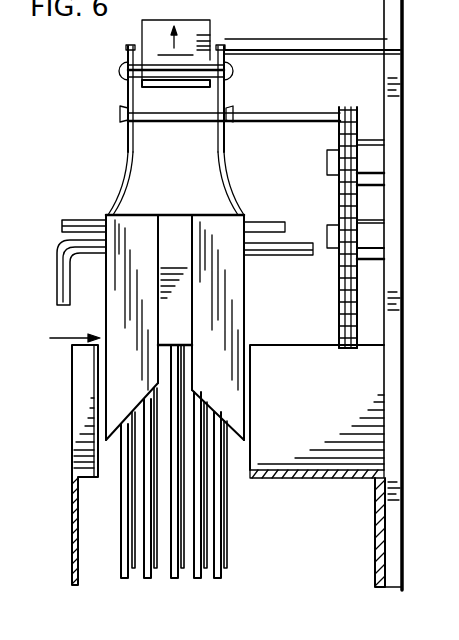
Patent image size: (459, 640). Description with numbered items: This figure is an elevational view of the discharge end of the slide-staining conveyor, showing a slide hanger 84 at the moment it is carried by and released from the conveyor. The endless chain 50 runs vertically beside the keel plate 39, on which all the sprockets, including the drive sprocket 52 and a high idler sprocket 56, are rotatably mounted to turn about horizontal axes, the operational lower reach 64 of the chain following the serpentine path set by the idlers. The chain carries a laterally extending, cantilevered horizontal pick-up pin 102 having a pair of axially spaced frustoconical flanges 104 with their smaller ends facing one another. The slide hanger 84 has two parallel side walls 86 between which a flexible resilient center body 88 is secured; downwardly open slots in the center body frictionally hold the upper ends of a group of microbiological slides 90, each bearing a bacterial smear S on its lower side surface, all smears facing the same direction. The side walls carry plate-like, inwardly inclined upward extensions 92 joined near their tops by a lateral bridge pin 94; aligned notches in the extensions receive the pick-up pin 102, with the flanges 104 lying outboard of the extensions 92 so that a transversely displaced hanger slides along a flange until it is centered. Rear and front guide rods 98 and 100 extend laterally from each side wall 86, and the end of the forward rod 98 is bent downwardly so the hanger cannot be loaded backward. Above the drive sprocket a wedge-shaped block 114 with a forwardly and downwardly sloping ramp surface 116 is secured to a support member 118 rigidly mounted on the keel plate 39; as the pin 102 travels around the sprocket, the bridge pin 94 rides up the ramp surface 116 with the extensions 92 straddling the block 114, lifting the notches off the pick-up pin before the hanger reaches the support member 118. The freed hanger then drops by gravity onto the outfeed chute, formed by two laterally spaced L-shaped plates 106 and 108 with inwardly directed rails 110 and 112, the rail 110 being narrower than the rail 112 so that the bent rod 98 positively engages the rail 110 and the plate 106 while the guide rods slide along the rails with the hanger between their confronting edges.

The keel plate 39 is at (446, 28).
The endless chain 50 is at (362, 80).
The drive sprocket 52 is at (340, 190).
The high idler sprocket 56 is at (339, 273).
The operational lower reach 64 is at (339, 331).
The slide hanger 84 is at (59, 331).
The side wall 86 is at (106, 322).
The center body 88 is at (177, 227).
The microbiological slide 90 is at (153, 523).
The upward extension 92 is at (128, 97).
The lateral bridge pin 94 is at (188, 68).
The rear guide rod 98 is at (60, 282).
The front guide rod 100 is at (78, 220).
The pick-up pin 102 is at (275, 123).
The flange 104 is at (121, 118).
The L-shaped plate 106 is at (72, 527).
The L-shaped plate 108 is at (379, 547).
The rail 110 is at (72, 380).
The rail 112 is at (318, 474).
The wedge-shaped block 114 is at (212, 23).
The ramp surface 116 is at (152, 33).
The support member 118 is at (303, 45).
The bacterial smear S is at (200, 545).